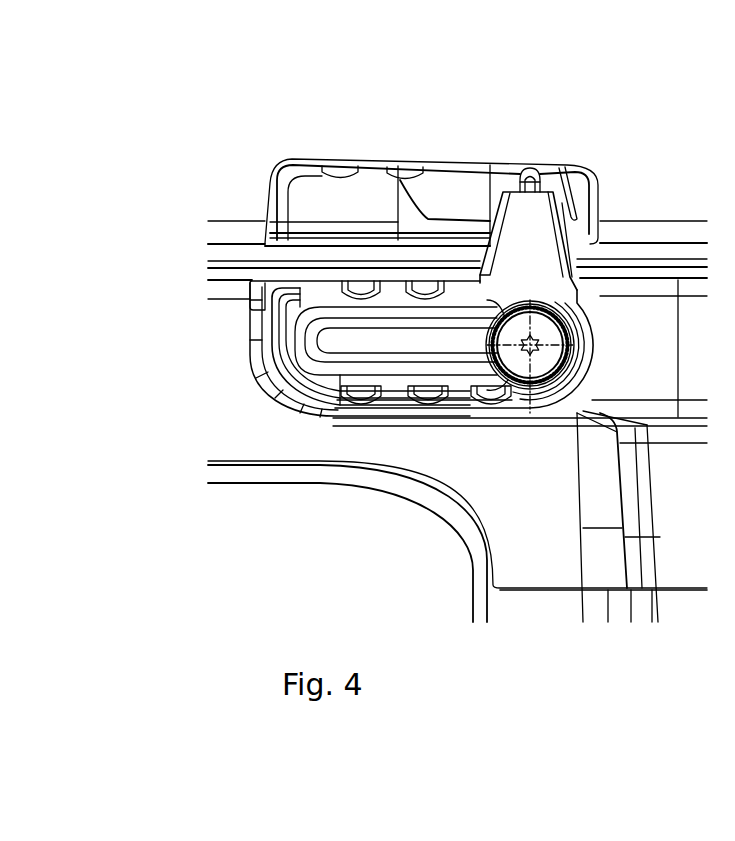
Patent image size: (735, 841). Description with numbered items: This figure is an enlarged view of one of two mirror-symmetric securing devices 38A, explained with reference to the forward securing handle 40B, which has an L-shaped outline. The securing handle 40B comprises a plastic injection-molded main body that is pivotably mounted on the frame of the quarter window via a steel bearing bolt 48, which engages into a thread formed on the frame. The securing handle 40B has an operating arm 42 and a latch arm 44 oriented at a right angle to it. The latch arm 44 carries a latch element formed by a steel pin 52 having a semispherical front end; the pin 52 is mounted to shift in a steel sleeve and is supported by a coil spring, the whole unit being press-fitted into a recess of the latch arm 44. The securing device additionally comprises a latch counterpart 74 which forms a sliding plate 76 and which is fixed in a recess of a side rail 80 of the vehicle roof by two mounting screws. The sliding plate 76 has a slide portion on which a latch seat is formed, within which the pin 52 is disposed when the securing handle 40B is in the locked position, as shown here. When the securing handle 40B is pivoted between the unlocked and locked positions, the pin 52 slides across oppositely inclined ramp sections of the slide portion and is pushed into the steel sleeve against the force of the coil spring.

The side rail 80 is at (245, 200).
The latch counterpart 74 is at (441, 190).
The sliding plate 76 is at (380, 205).
The pin 52 is at (534, 180).
The latch arm 44 is at (547, 228).
The securing device 38A is at (577, 280).
The bearing bolt 48 is at (550, 346).
The securing handle 40B is at (305, 398).
The operating arm 42 is at (383, 362).